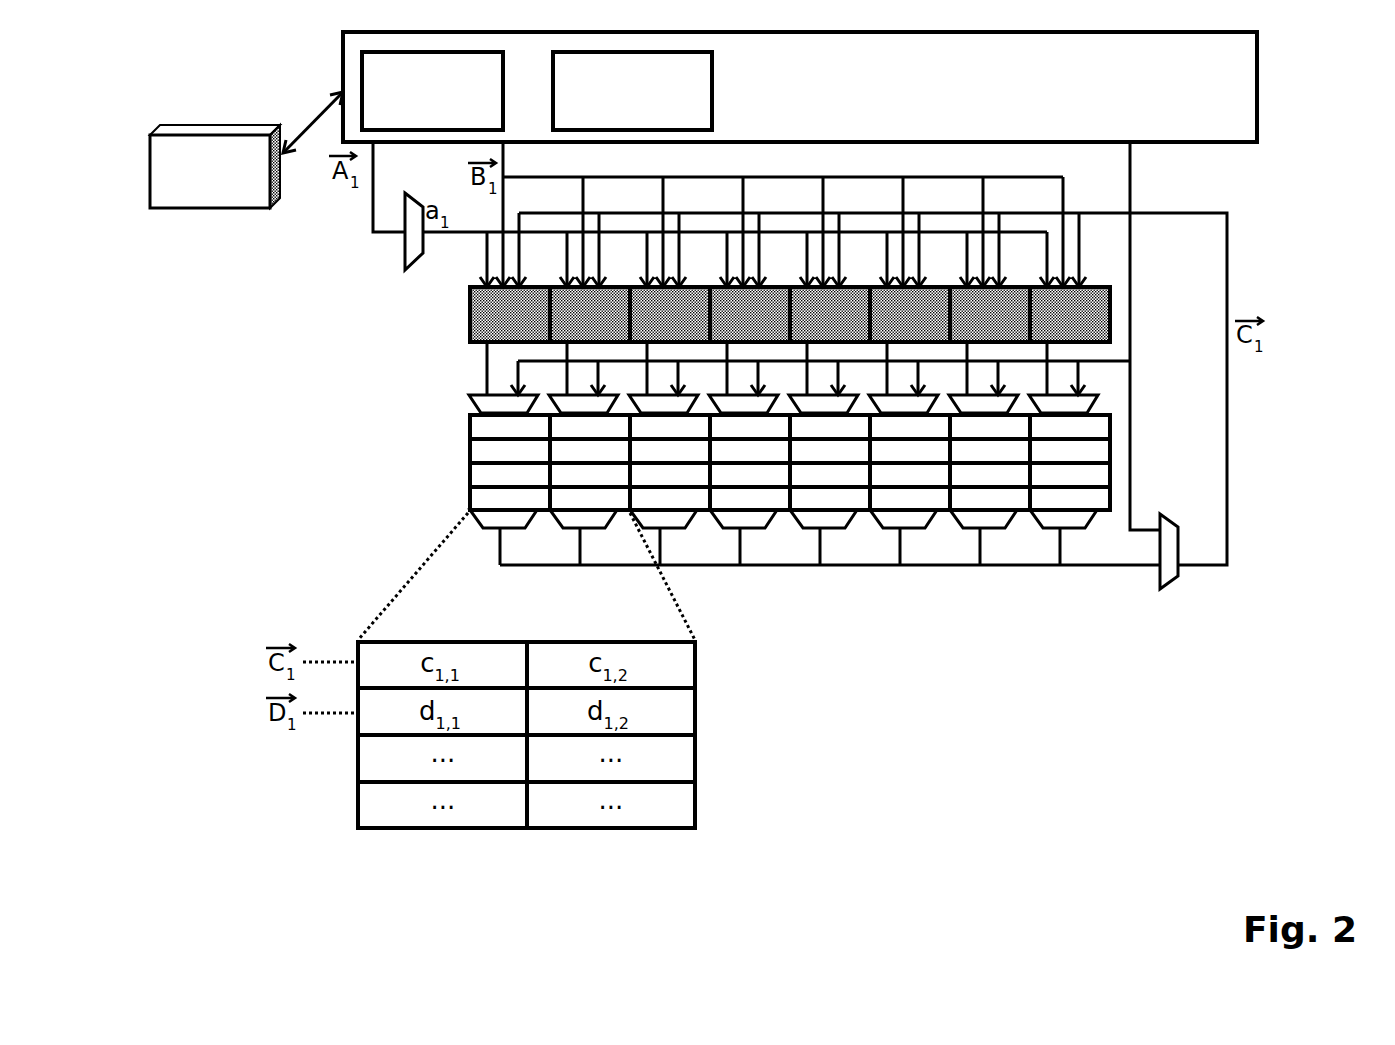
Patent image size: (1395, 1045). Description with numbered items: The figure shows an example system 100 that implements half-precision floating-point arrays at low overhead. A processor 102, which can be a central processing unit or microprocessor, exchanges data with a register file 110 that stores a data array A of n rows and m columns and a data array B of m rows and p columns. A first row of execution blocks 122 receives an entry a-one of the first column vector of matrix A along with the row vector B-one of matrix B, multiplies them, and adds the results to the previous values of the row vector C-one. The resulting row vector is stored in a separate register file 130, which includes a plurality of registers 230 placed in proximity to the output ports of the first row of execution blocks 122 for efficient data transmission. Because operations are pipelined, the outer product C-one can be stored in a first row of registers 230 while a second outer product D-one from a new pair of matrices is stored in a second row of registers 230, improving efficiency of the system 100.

The system 100 is at (1133, 802).
The processor 102 is at (246, 150).
The register file 110 is at (800, 87).
The execution blocks 122 is at (456, 311).
The register file 130 is at (453, 415).
The registers 230 is at (487, 428).